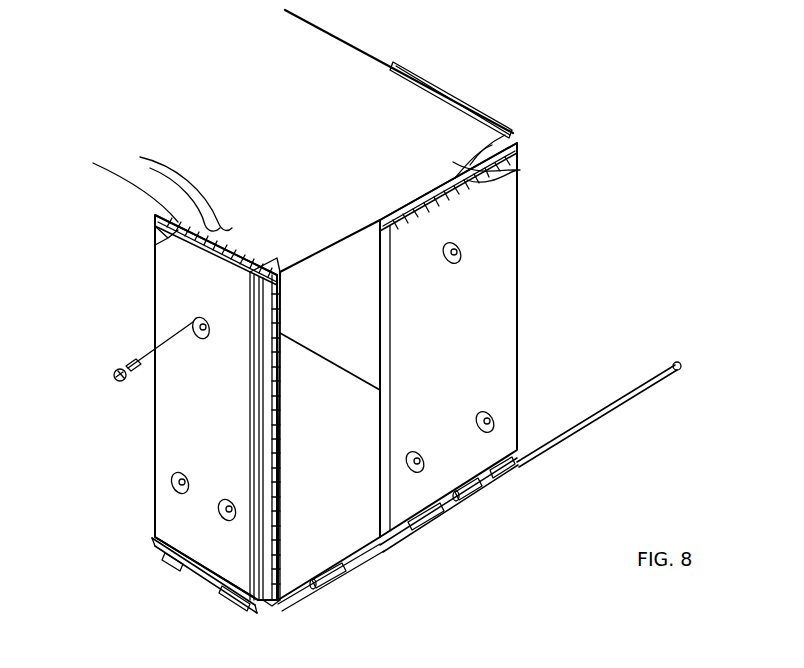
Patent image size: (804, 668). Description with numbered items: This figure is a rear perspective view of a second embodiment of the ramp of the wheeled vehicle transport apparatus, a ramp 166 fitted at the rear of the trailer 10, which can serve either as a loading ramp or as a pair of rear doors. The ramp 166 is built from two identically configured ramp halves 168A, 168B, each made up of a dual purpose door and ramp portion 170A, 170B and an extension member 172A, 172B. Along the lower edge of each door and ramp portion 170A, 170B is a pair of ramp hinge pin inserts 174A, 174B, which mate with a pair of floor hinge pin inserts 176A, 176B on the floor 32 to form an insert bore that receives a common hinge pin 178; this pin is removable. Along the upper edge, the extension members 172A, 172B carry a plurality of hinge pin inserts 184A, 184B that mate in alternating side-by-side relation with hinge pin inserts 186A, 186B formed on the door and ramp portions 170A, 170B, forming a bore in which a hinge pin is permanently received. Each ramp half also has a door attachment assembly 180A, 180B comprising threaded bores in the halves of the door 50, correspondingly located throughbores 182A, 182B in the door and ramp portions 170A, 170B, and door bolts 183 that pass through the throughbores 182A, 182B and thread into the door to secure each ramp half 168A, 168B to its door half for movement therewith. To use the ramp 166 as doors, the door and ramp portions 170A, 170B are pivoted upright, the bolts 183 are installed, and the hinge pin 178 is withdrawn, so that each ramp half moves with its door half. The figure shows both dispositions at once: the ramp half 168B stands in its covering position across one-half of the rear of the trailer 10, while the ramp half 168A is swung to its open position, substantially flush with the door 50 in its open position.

The trailer 10 is at (315, 80).
The floor 32 is at (345, 535).
The door 50 is at (160, 213).
The ramp 166 is at (452, 548).
The ramp half 168A is at (146, 483).
The ramp half 168B is at (540, 300).
The door and ramp portion 170A is at (178, 430).
The door and ramp portion 170B is at (507, 398).
The extension member 172A is at (166, 299).
The extension member 172B is at (495, 262).
The ramp hinge pin inserts 174A is at (228, 592).
The ramp hinge pin inserts 174B is at (497, 487).
The floor hinge pin inserts 176A is at (330, 578).
The floor hinge pin inserts 176B is at (448, 510).
The common hinge pin 178 is at (610, 407).
The door attachment assembly 180A is at (180, 328).
The door attachment assembly 180B is at (467, 437).
The throughbores 182A is at (227, 503).
The throughbores 182B is at (420, 450).
The door bolts 183 is at (115, 373).
The hinge pin inserts 184A is at (158, 245).
The hinge pin inserts 184B is at (520, 170).
The hinge pin inserts 186A is at (185, 220).
The hinge pin inserts 186B is at (485, 140).